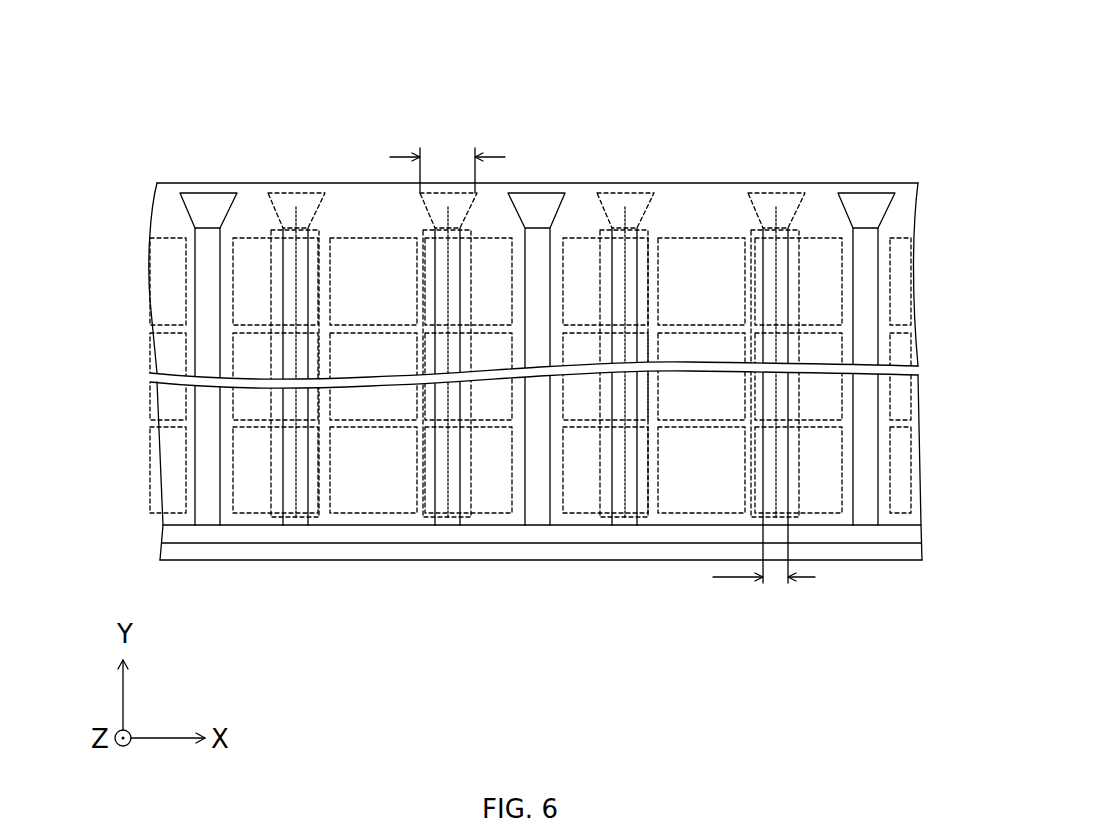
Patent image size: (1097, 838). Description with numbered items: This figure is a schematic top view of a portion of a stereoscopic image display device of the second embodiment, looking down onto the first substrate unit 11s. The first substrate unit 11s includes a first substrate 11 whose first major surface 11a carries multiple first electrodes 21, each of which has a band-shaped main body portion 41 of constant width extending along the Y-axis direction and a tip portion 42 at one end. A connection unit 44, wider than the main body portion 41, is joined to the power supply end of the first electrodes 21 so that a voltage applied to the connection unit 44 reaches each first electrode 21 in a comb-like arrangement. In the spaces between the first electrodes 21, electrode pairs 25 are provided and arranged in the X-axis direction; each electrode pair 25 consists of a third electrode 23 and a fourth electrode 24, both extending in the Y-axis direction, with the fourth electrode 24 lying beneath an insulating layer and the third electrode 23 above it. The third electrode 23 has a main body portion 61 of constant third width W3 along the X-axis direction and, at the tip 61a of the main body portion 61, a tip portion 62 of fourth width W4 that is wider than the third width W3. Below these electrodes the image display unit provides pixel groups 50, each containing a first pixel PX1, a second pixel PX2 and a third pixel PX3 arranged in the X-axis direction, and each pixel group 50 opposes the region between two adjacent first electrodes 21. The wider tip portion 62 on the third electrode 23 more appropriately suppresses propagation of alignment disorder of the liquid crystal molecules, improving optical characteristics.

The first substrate 11 is at (507, 364).
The first major surface 11a is at (160, 218).
The first substrate unit 11s is at (175, 181).
The first electrode 21 is at (555, 304).
The main body portion 41 is at (212, 277).
The tip portion 42 is at (205, 200).
The connection unit 44 is at (538, 545).
The electrode pair 25 is at (566, 264).
The fourth electrode 24 is at (271, 228).
The third electrode 23 is at (551, 286).
The main body portion 61 is at (302, 277).
The tip portion 62 is at (297, 207).
The tip 61a is at (776, 222).
The pixel group 50 is at (548, 468).
The first pixel PX1 is at (260, 515).
The second pixel PX2 is at (372, 515).
The third pixel PX3 is at (637, 443).
The third width W3 is at (764, 570).
The fourth width W4 is at (447, 158).